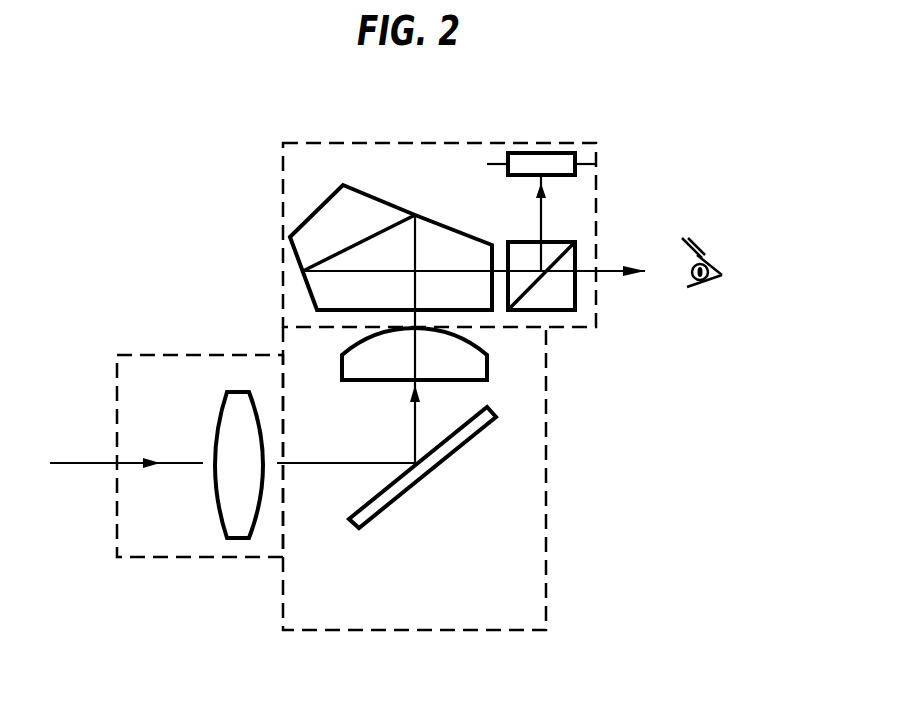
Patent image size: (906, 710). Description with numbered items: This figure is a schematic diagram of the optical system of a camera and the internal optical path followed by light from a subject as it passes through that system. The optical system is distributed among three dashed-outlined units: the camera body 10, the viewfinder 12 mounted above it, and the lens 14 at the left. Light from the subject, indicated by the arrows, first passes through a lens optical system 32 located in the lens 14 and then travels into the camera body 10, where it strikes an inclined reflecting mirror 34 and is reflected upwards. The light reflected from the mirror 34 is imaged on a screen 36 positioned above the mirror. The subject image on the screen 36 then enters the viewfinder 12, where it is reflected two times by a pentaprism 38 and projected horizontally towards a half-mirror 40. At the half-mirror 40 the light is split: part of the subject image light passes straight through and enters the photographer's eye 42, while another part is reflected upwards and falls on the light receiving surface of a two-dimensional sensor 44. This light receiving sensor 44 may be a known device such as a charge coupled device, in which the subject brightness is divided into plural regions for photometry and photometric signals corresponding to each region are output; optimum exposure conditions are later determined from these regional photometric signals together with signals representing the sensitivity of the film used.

The camera body 10 is at (548, 530).
The viewfinder 12 is at (430, 143).
The lens 14 is at (138, 560).
The lens optical system 32 is at (233, 540).
The reflecting mirror 34 is at (438, 455).
The screen 36 is at (473, 362).
The pentaprism 38 is at (313, 232).
The half-mirror 40 is at (562, 298).
The photographer's eye 42 is at (715, 258).
The two-dimensional sensor 44 is at (542, 153).